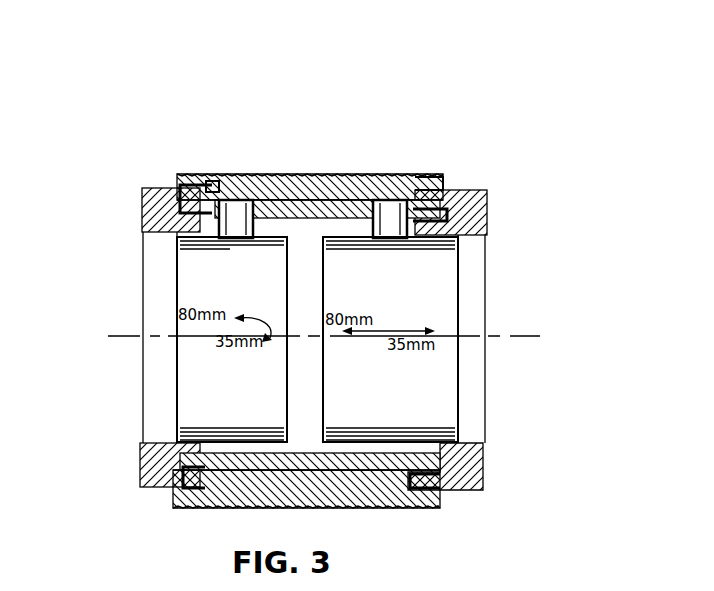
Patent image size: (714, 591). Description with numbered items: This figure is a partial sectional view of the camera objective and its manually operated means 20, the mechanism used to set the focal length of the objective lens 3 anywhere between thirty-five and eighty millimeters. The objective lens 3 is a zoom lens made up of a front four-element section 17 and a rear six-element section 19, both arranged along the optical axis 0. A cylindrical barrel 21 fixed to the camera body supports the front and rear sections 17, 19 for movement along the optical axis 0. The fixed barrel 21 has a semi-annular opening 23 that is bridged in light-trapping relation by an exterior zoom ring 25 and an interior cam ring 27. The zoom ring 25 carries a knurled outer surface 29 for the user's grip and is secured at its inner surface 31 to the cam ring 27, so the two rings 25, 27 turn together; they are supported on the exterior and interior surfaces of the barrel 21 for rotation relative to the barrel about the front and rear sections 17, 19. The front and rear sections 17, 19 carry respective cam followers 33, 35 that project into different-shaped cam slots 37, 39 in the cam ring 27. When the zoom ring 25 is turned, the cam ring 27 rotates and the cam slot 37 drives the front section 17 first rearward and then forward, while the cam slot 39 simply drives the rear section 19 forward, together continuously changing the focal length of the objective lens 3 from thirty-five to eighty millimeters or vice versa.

The manually operated means 20 is at (241, 132).
The objective lens 3 is at (128, 325).
The optical axis 0 is at (540, 336).
The cylindrical barrel 21 is at (142, 208).
The semi-annular opening 23 is at (262, 200).
The zoom ring 25 is at (334, 186).
The cam ring 27 is at (172, 190).
The knurled outer surface 29 is at (381, 186).
The inner surface 31 is at (292, 186).
The cam follower 33 is at (230, 238).
The cam follower 35 is at (382, 238).
The cam slot 37 is at (222, 190).
The cam slot 39 is at (410, 180).
The front four-element section 17 is at (176, 410).
The rear six-element section 19 is at (322, 410).